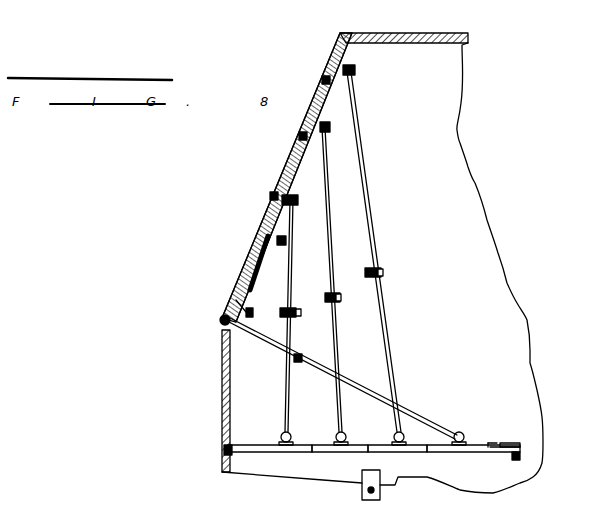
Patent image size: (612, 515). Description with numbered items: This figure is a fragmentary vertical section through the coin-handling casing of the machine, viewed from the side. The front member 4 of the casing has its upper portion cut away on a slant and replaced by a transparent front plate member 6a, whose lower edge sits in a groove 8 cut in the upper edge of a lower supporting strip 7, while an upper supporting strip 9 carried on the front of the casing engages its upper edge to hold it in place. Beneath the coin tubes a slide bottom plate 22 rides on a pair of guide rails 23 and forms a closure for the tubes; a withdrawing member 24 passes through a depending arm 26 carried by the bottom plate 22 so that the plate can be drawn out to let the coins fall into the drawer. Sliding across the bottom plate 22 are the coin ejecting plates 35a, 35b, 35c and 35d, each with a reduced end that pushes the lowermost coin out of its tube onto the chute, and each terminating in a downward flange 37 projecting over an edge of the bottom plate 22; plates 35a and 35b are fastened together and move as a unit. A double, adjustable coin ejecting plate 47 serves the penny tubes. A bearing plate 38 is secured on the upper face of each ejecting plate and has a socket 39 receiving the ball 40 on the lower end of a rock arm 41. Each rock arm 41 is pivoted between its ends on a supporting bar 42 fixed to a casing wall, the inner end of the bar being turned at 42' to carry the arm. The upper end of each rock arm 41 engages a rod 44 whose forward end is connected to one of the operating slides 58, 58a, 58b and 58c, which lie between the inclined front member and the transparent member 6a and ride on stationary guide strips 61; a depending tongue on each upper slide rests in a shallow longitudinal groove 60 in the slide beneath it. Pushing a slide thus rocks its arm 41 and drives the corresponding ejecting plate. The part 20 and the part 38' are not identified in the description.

The top rail 20 is at (426, 36).
The upper supporting strip 9 is at (338, 42).
The front member 4 is at (222, 418).
The depending arm 26 is at (362, 482).
The withdrawing member 24 is at (380, 493).
The coin ejecting plate 35a is at (252, 444).
The coin ejecting plate 35b is at (262, 453).
The coin ejecting plate 35c is at (368, 446).
The coin ejecting plate 35d is at (404, 453).
The double and adjustable coin ejecting plate 47 is at (492, 456).
The downward flange 37 is at (272, 474).
The guide rails 23 is at (224, 453).
The bottom plate 22 is at (518, 445).
The rock arm 41 is at (289, 334).
The rod 44 is at (356, 70).
The supporting bar 42 is at (318, 320).
The turned end 42' is at (362, 312).
The socket 39 is at (283, 432).
The ball 40 is at (333, 432).
The bearing plate 38 is at (368, 433).
The roller seat 38' is at (488, 429).
The lower supporting strip 7 is at (218, 322).
The groove 8 is at (225, 312).
The operating slide 58 is at (236, 300).
The operating slide 58a is at (280, 196).
The operating slide 58b is at (300, 135).
The operating slide 58c is at (322, 80).
The stationary guide strips 61 is at (318, 96).
The shallow longitudinal groove 60 is at (312, 113).
The transparent front plate member 6a is at (250, 247).